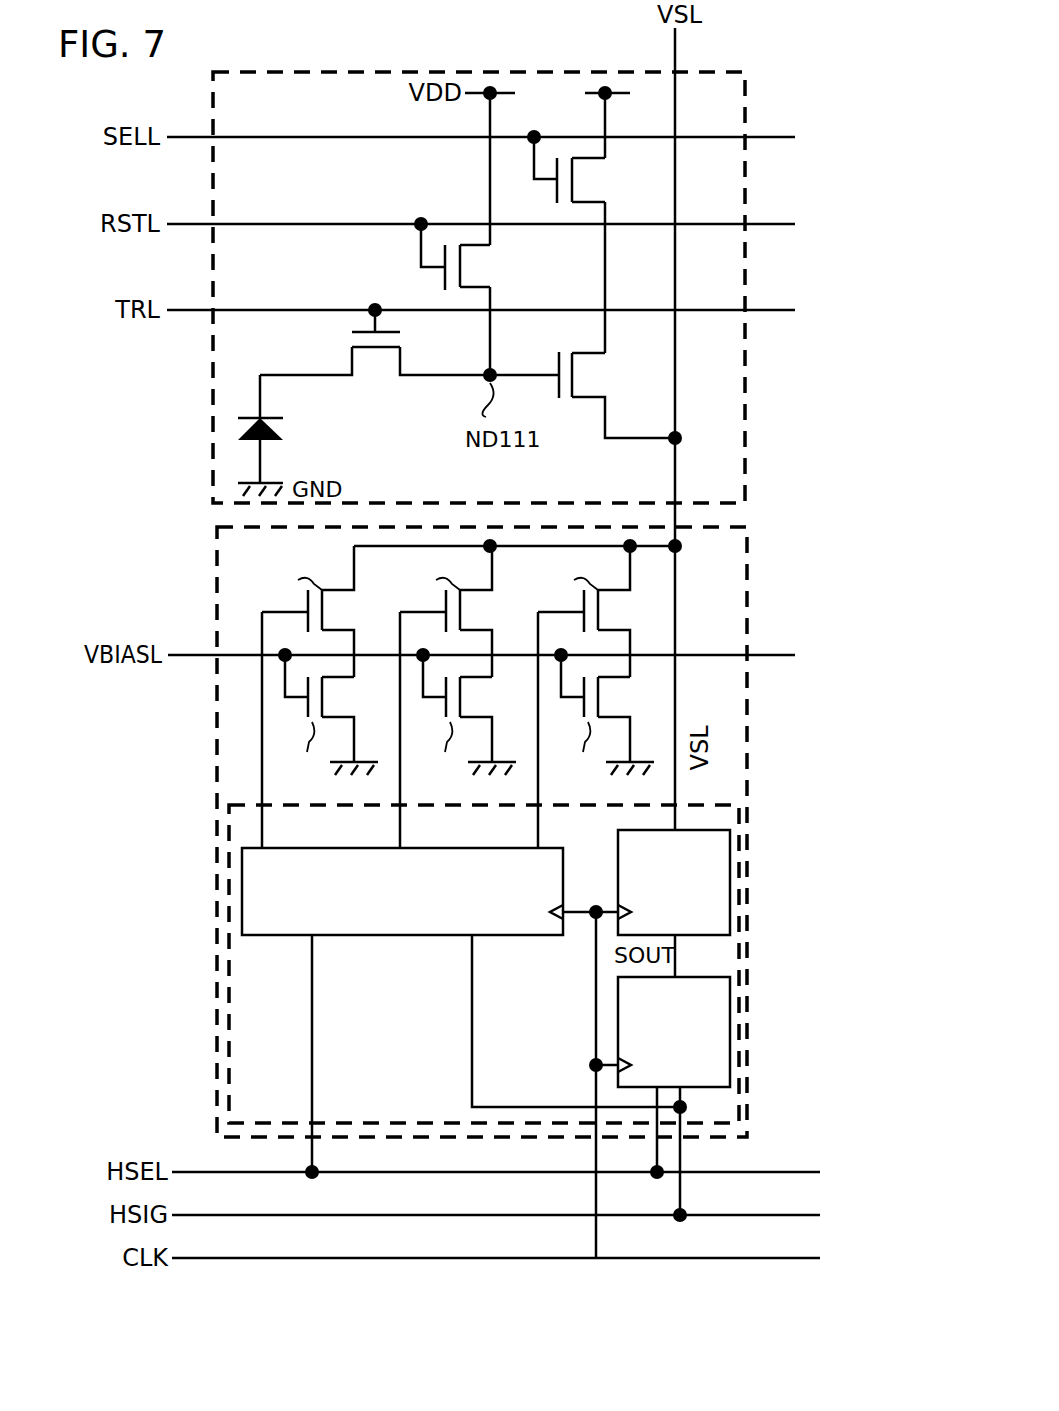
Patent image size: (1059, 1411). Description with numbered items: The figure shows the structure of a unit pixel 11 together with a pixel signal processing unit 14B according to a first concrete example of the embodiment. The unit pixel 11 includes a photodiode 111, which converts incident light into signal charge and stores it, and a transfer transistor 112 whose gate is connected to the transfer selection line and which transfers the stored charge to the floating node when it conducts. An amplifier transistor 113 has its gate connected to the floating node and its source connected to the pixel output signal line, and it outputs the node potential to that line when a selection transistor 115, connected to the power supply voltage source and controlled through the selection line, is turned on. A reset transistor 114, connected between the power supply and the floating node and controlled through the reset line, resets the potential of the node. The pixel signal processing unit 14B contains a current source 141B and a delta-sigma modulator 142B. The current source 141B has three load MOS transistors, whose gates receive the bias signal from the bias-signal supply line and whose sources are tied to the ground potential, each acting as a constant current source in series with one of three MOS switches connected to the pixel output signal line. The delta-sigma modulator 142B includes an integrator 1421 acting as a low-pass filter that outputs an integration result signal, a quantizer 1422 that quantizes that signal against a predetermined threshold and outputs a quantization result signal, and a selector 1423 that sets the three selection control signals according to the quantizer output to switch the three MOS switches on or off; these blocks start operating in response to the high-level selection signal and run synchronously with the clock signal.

The unit pixel 11 is at (376, 72).
The photodiode 111 is at (283, 430).
The transfer transistor 112 is at (373, 360).
The amplifier transistor 113 is at (590, 378).
The reset transistor 114 is at (468, 269).
The selection transistor 115 is at (580, 181).
The pixel signal processing unit 14B is at (748, 742).
The current source 141B is at (240, 737).
The ΔΣ modulator 142B is at (229, 1028).
The integrator 1421 is at (730, 883).
The quantizer 1422 is at (730, 1030).
The selector 1423 is at (242, 893).